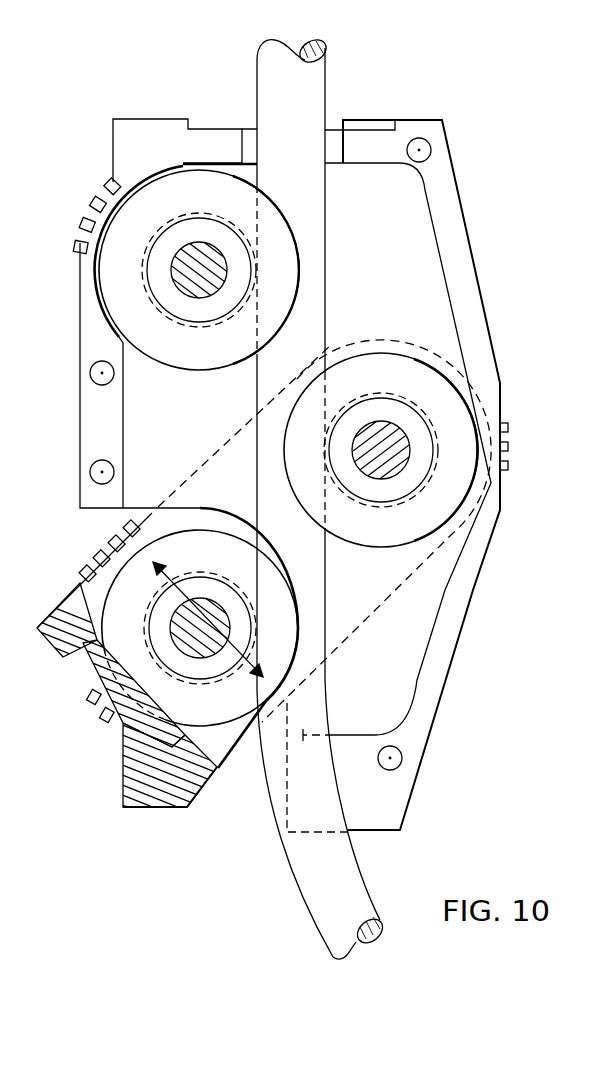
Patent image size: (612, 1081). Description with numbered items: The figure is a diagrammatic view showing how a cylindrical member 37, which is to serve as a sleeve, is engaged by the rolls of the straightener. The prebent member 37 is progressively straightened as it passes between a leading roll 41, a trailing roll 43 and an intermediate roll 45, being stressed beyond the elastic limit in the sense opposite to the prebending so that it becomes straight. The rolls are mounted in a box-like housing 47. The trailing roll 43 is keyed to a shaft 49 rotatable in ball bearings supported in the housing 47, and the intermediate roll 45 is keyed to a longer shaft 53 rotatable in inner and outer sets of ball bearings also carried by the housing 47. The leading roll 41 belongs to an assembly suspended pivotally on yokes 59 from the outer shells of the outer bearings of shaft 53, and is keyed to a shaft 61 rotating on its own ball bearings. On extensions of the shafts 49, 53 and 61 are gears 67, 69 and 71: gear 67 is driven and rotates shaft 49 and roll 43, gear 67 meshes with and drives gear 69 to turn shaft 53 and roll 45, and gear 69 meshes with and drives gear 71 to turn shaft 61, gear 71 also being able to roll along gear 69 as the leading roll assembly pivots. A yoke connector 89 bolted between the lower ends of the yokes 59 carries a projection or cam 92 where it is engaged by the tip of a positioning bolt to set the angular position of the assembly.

The cylindrical member 37 is at (345, 877).
The leading roll 41 is at (121, 583).
The trailing roll 43 is at (293, 258).
The intermediate roll 45 is at (378, 360).
The housing 47 is at (153, 135).
The shaft 49 is at (210, 247).
The shaft 53 is at (385, 478).
The yoke 59 is at (229, 745).
The shaft 61 is at (212, 606).
The gear 67 is at (74, 238).
The gear 69 is at (509, 450).
The gear 71 is at (125, 540).
The yoke connector 89 is at (62, 658).
The cam 92 is at (157, 790).